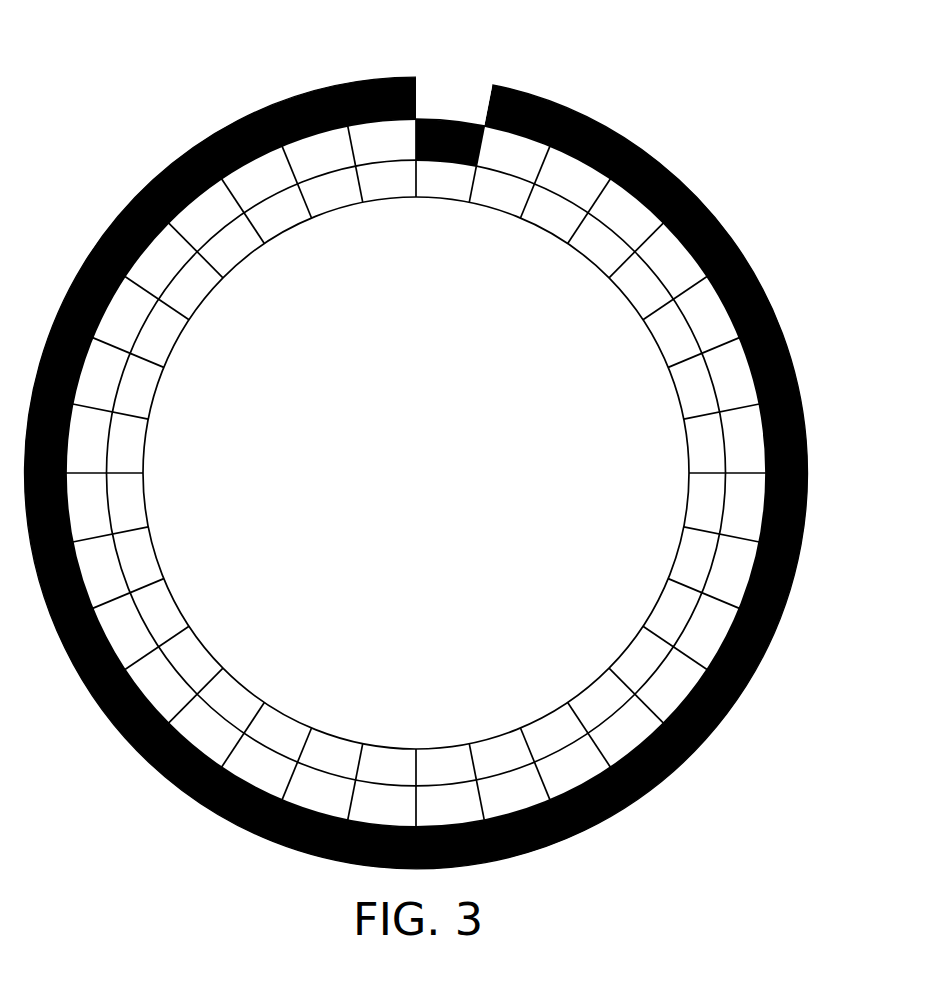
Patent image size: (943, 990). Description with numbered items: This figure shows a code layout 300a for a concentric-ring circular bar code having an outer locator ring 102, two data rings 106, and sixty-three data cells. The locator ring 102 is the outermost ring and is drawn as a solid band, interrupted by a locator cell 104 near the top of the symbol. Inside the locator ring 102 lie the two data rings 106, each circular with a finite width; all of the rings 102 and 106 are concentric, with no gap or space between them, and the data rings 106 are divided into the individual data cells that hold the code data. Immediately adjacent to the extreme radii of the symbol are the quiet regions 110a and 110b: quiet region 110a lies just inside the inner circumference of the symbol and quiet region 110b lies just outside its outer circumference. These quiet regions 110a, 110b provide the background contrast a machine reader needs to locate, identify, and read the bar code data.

The code layout 300a is at (159, 132).
The locator ring 102 is at (661, 163).
The locator cell 104 is at (457, 85).
The data ring 106 is at (634, 220).
The quiet region 110a is at (407, 705).
The quiet region 110b is at (727, 742).